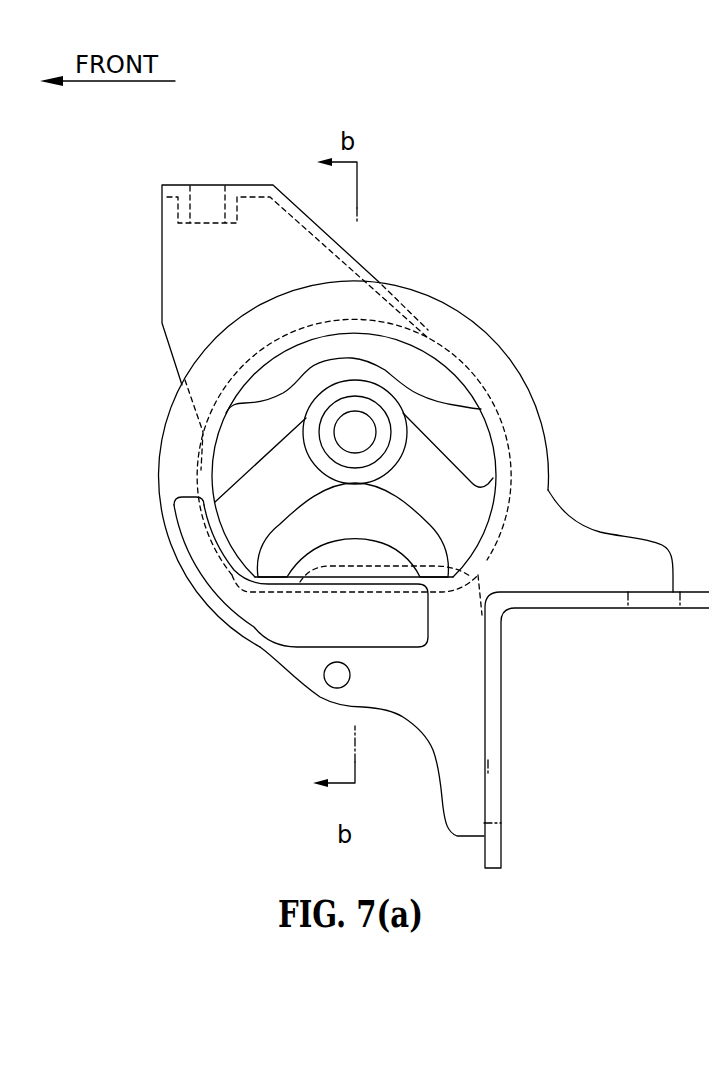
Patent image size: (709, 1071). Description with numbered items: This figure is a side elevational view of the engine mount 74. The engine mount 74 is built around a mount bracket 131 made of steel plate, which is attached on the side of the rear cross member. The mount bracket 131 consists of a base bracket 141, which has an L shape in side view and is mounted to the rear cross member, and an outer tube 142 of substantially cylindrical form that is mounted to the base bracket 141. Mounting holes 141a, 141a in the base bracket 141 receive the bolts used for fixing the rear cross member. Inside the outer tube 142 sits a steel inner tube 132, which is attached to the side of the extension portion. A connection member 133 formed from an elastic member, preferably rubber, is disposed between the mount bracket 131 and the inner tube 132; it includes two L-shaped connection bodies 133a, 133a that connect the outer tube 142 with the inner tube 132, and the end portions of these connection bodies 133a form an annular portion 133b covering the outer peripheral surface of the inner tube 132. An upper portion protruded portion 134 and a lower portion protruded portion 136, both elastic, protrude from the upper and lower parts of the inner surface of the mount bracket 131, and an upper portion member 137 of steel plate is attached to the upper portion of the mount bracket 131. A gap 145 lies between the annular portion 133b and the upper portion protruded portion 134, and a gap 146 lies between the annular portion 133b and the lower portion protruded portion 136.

The engine mount 74 is at (584, 239).
The mount bracket 131 is at (536, 381).
The inner tube 132 is at (322, 432).
The connection member 133 is at (456, 456).
The connection body 133a is at (443, 492).
The annular portion 133b is at (380, 392).
The upper portion protruded portion 134 is at (357, 342).
The lower portion protruded portion 136 is at (350, 557).
The upper portion member 137 is at (212, 185).
The base bracket 141 is at (495, 712).
The mounting hole 141a is at (628, 605).
The outer tube 142 is at (550, 517).
The gap 145 is at (338, 366).
The gap 146 is at (318, 519).